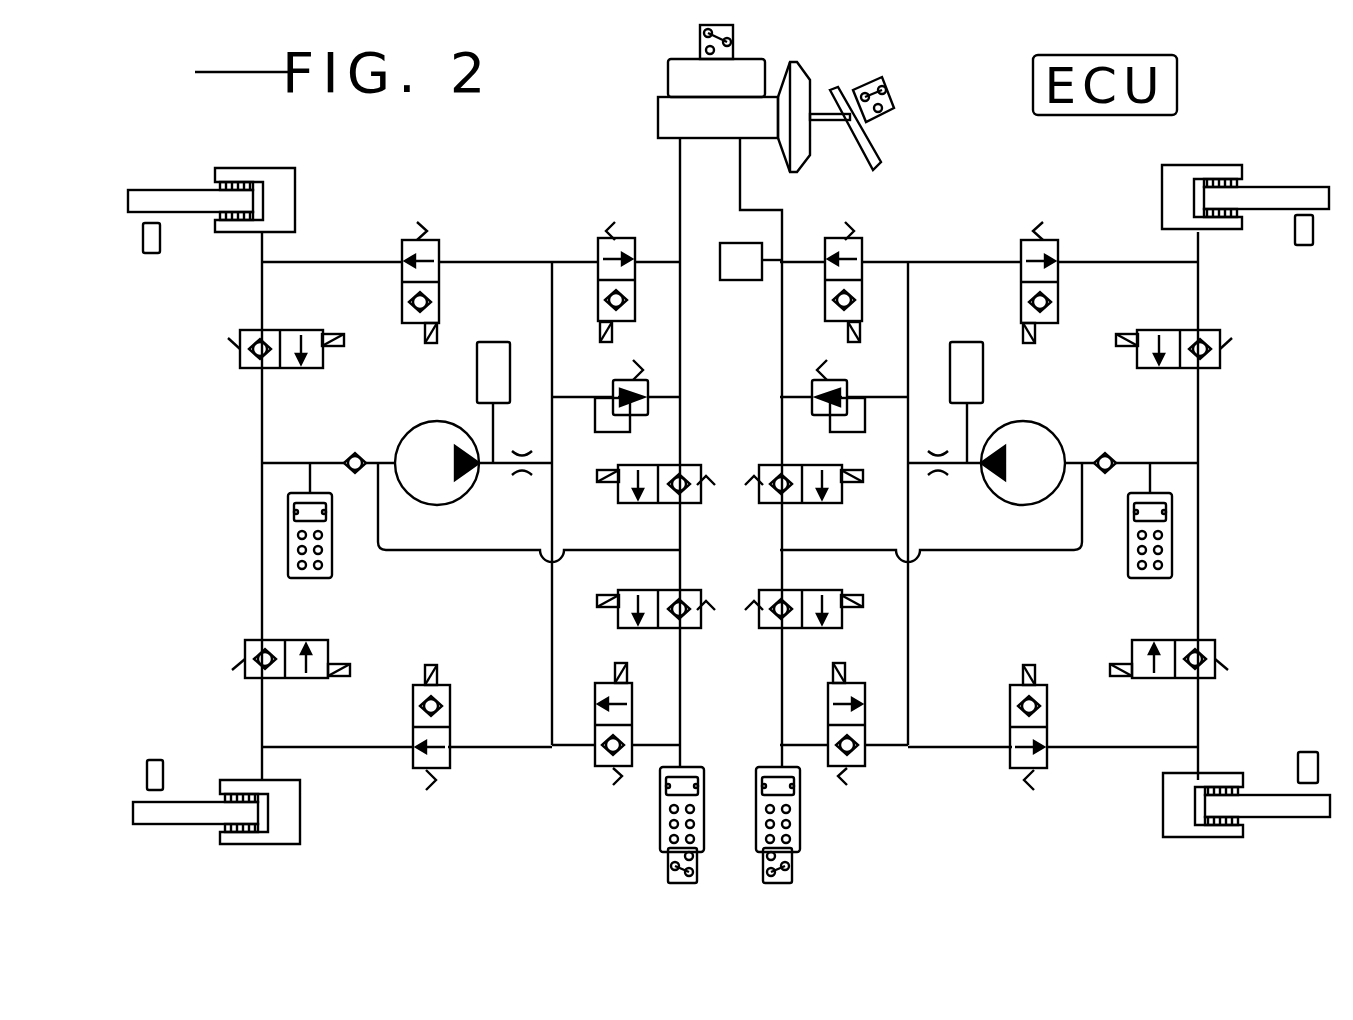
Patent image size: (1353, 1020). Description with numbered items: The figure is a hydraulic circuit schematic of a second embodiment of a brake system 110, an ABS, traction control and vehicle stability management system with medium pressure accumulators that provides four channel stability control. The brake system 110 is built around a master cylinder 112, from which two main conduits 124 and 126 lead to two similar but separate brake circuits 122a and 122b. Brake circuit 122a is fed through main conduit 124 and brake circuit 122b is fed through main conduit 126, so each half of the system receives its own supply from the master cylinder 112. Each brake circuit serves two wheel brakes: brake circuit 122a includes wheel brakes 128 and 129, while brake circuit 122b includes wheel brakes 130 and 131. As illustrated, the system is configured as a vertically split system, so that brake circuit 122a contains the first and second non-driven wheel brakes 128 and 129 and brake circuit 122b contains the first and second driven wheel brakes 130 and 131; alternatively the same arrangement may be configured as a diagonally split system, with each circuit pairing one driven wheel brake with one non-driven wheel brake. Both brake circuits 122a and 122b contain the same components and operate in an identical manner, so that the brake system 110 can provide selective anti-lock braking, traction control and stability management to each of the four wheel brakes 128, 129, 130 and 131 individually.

The brake system 110 is at (730, 497).
The master cylinder 112 is at (656, 123).
The brake circuit 122a is at (493, 224).
The brake circuit 122b is at (915, 222).
The main conduit 124 is at (680, 197).
The main conduit 126 is at (740, 183).
The wheel brake 128 is at (255, 168).
The wheel brake 129 is at (280, 840).
The wheel brake 130 is at (1200, 165).
The wheel brake 131 is at (1178, 835).